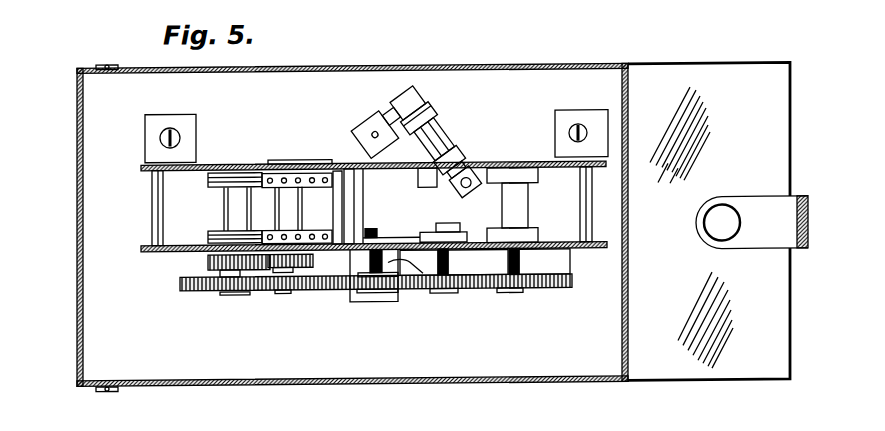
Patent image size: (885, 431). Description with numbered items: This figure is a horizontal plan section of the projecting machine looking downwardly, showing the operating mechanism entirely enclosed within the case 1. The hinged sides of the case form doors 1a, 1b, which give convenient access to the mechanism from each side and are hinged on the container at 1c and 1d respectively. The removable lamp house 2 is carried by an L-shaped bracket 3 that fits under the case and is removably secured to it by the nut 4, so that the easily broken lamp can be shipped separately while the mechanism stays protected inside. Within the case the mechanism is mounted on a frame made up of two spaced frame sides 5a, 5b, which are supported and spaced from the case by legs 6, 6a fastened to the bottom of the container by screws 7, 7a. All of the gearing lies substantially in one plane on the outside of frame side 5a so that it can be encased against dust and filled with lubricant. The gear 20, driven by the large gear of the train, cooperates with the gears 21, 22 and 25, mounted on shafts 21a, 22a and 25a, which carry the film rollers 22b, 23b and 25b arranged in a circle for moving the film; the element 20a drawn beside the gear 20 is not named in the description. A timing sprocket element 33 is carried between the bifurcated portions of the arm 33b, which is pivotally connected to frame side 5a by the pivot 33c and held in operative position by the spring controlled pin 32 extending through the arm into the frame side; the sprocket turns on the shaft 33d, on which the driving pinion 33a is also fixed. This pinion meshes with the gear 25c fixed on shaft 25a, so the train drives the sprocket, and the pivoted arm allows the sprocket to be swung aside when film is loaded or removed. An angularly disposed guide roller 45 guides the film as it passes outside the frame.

The case 1 is at (483, 95).
The door 1a is at (543, 64).
The door 1b is at (510, 386).
The hinge 1c is at (95, 62).
The hinge 1d is at (96, 389).
The removable lamp house 2 is at (118, 328).
The L-shaped bracket 3 is at (116, 107).
The nut 4 is at (349, 84).
The frame side 5a is at (573, 249).
The frame side 5b is at (497, 163).
The leg 6 is at (393, 301).
The leg 6a is at (558, 124).
The screw 7 is at (98, 82).
The screw 7a is at (578, 126).
The gear 20 is at (342, 291).
The rack guide frame 20a is at (423, 293).
The gear 21 is at (470, 291).
The shaft 21a is at (452, 273).
The gear 22 is at (553, 290).
The shaft 22a is at (512, 259).
The roller 22b is at (527, 204).
The roller 23b is at (417, 180).
The gear 25 is at (205, 291).
The shaft 25a is at (228, 293).
The roller 25b is at (213, 176).
The gear 25c is at (210, 257).
The spring controlled pin 32 is at (357, 215).
The timing sprocket element 33 is at (267, 165).
The driving pinion 33a is at (311, 291).
The arm 33b is at (383, 236).
The pivot 33c is at (450, 223).
The shaft 33d is at (283, 292).
The guide roller 45 is at (452, 155).